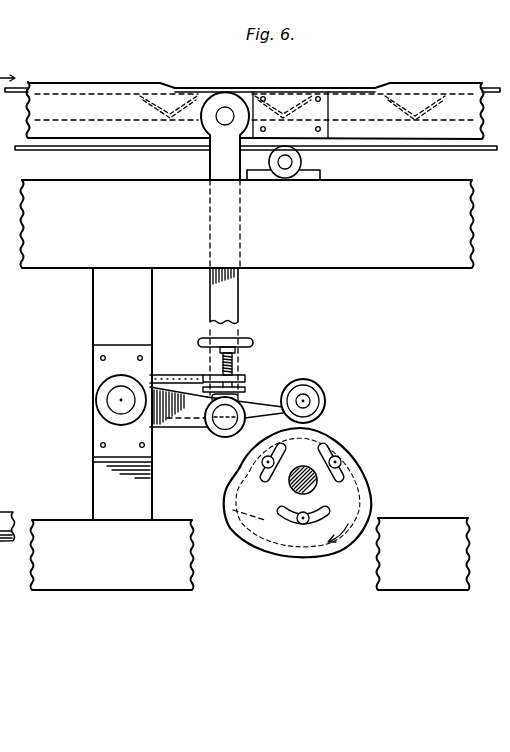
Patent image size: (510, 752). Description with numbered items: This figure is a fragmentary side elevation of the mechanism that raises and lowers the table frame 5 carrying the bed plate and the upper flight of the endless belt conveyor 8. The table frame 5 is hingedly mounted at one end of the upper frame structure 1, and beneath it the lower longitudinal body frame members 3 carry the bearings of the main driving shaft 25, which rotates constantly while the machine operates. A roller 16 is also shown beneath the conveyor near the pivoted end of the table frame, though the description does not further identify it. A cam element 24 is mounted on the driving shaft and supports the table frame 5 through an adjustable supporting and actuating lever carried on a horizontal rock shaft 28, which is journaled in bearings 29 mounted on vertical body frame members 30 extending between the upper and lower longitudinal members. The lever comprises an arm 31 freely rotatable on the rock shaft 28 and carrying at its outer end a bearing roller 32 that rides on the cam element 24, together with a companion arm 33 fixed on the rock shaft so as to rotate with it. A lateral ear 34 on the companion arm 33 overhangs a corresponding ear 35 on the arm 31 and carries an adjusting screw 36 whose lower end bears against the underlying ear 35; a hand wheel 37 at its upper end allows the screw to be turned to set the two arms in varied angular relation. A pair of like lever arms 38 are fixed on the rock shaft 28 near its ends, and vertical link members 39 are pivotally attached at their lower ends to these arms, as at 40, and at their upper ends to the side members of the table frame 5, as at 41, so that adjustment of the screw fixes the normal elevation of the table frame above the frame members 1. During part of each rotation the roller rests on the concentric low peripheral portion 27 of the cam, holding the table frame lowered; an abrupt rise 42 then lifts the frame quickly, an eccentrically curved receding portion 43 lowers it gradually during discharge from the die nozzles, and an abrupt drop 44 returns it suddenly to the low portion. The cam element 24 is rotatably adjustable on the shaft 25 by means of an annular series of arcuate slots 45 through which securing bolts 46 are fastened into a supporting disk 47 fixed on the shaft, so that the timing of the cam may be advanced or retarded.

The upper frame structure 1 is at (394, 258).
The lower longitudinal body frame members 3 is at (162, 583).
The table frame 5 is at (100, 105).
The endless belt conveyor 8 is at (20, 87).
The roller 16 is at (302, 163).
The cam element 24 is at (254, 540).
The main driving shaft 25 is at (318, 484).
The concentric low peripheral portion 27 is at (335, 441).
The horizontal rock shaft 28 is at (121, 395).
The bearings 29 is at (105, 412).
The vertical body frame members 30 is at (107, 314).
The arm 31 is at (283, 386).
The bearing roller 32 is at (325, 397).
The companion arm 33 is at (163, 374).
The lateral ear 34 is at (241, 376).
The ear 35 is at (250, 373).
The adjusting screw 36 is at (221, 357).
The hand wheel 37 is at (208, 338).
The lever arms 38 is at (197, 425).
The vertical link members 39 is at (220, 161).
The pivotal attachment 40 is at (222, 428).
The pivotal attachment 41 is at (226, 108).
The abrupt rise 42 is at (228, 482).
The eccentric receding portion 43 is at (325, 557).
The abrupt drop 44 is at (367, 485).
The arcuate slots 45 is at (283, 451).
The securing bolts 46 is at (342, 459).
The supporting disk 47 is at (237, 516).